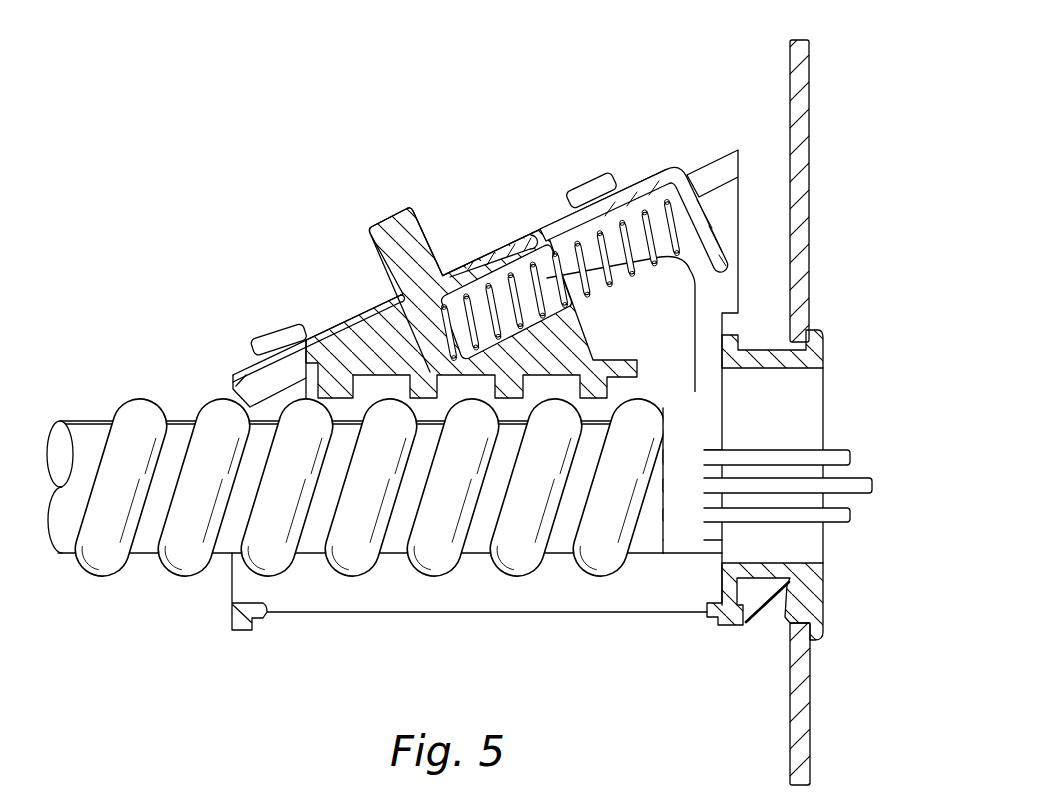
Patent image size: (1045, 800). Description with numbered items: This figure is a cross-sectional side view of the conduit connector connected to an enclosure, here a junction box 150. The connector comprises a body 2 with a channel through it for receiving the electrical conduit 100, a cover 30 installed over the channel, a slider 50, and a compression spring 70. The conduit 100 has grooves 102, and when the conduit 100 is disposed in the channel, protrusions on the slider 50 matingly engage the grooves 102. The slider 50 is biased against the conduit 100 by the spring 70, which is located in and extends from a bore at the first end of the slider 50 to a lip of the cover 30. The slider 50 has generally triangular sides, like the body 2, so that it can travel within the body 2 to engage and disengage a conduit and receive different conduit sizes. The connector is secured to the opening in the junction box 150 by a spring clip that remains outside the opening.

The body 2 is at (458, 612).
The cover 30 is at (345, 330).
The slider 50 is at (383, 232).
The compression spring 70 is at (538, 276).
The conduit 100 is at (138, 408).
The grooves 102 is at (140, 557).
The junction box 150 is at (788, 66).